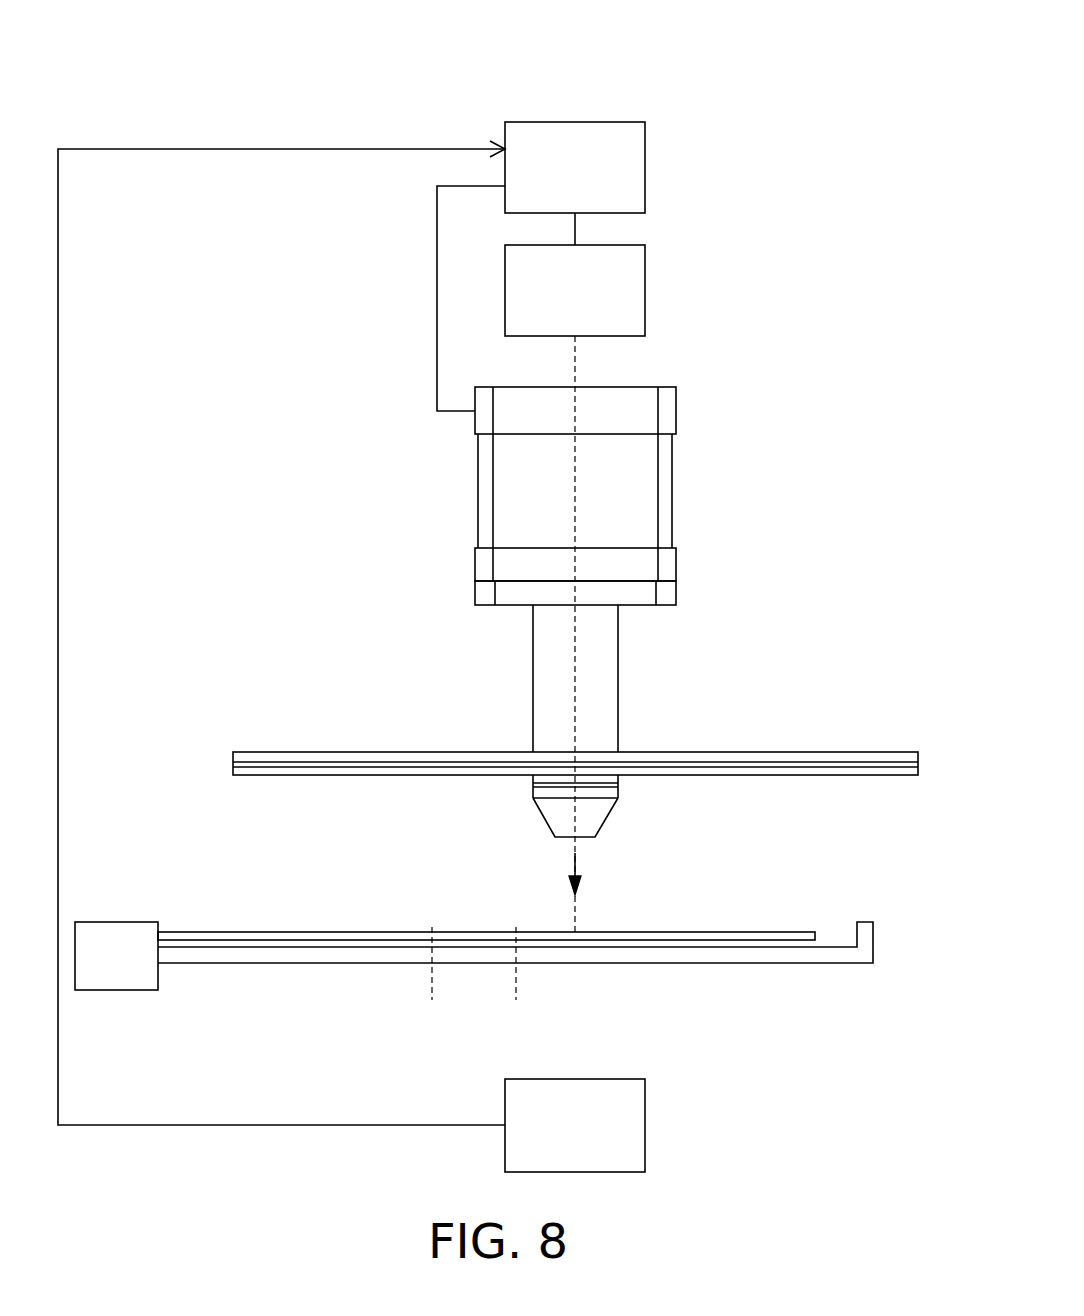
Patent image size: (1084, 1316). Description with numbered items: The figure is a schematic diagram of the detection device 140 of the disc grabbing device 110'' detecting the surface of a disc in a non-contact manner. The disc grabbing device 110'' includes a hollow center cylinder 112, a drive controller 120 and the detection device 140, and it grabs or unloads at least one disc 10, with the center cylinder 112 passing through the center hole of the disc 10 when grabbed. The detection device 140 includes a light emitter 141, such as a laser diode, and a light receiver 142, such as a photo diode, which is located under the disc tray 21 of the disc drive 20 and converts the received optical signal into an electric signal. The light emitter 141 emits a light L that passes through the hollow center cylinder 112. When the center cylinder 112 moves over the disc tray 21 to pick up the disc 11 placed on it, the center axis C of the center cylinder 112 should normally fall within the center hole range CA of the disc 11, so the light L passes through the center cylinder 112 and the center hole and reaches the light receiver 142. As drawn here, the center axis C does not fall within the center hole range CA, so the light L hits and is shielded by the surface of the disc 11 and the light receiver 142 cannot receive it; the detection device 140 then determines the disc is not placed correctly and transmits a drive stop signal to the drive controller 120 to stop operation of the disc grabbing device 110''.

The disc 10 is at (887, 752).
The disc 11 is at (785, 932).
The disc drive 20 is at (117, 990).
The disc tray 21 is at (287, 963).
The disc grabbing device 110'' is at (671, 612).
The center cylinder 112 is at (618, 678).
The drive controller 120 is at (646, 162).
The detection device 140 is at (723, 587).
The light emitter 141 is at (646, 287).
The light receiver 142 is at (646, 1120).
The center axis C is at (575, 715).
The light L is at (579, 873).
The center hole range CA is at (516, 987).